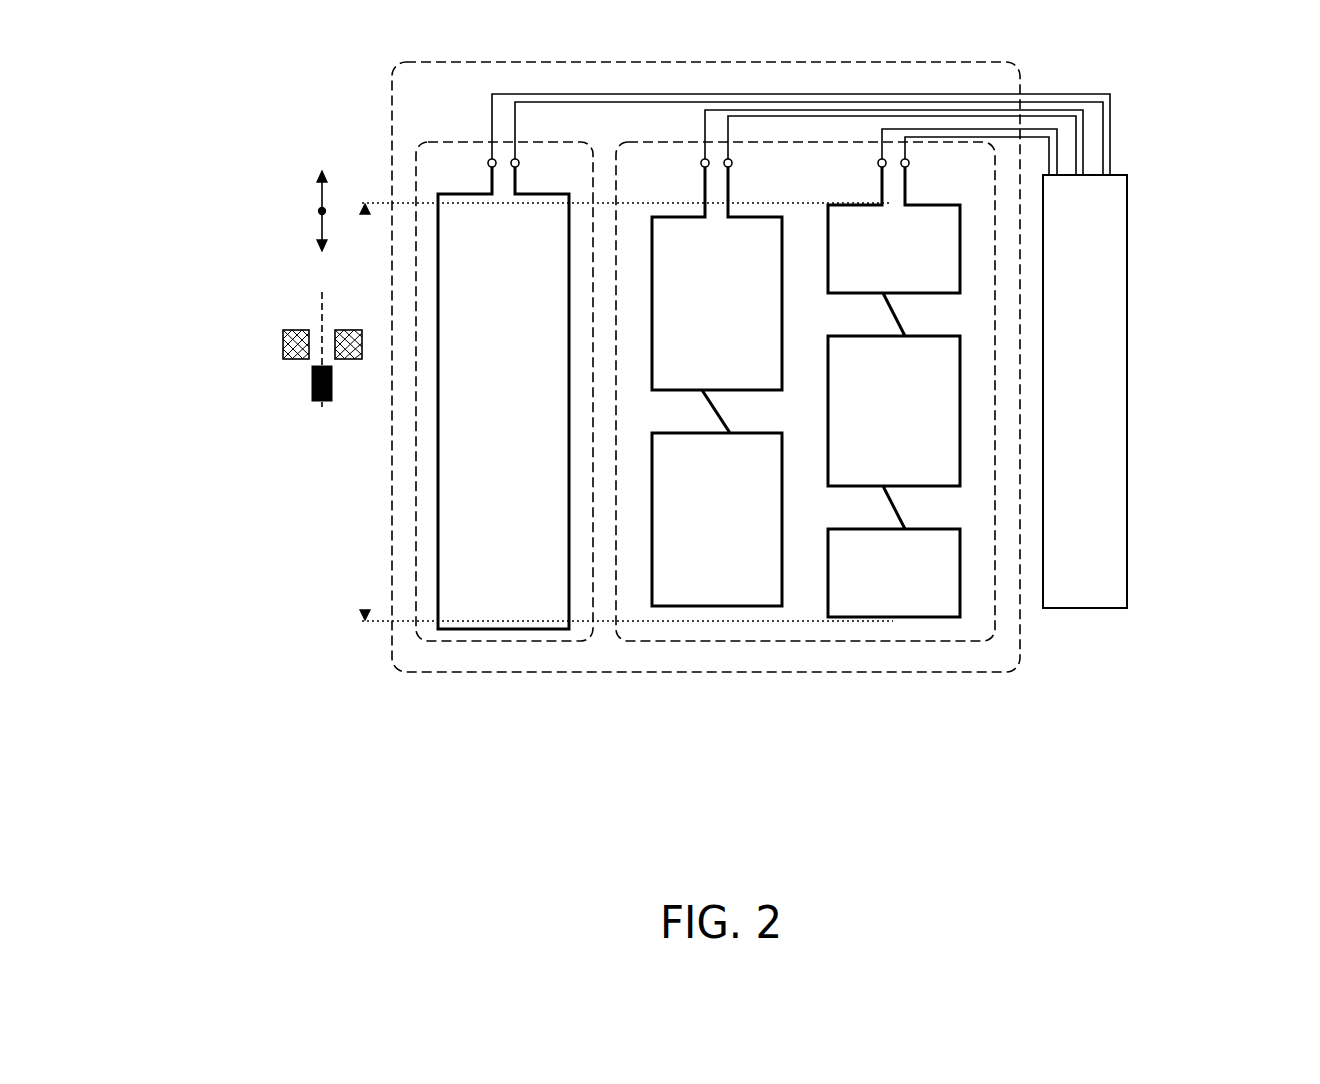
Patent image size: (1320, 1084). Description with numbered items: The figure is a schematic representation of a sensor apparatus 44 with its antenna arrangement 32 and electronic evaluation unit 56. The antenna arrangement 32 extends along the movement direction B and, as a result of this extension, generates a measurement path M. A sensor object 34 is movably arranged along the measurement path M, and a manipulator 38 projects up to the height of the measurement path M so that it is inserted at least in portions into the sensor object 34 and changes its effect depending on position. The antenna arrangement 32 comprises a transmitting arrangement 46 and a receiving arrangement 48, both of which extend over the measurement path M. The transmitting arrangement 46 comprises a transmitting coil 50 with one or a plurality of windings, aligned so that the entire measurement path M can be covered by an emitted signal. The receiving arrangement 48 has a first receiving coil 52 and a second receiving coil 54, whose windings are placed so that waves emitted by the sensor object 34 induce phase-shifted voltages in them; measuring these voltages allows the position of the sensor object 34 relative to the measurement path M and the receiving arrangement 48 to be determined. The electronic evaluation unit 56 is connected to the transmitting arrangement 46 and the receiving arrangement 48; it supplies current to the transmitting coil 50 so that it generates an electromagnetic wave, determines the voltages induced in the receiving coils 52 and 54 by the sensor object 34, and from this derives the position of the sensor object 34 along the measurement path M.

The antenna arrangement 32 is at (1024, 640).
The sensor object 34 is at (283, 362).
The manipulator 38 is at (316, 402).
The sensor apparatus 44 is at (252, 664).
The transmitting arrangement 46 is at (484, 641).
The receiving arrangement 48 is at (672, 641).
The transmitting coil 50 is at (528, 629).
The first receiving coil 52 is at (750, 606).
The second receiving coil 54 is at (926, 620).
The electronic evaluation unit 56 is at (1100, 515).
The movement direction B is at (318, 212).
The measurement path M is at (365, 528).